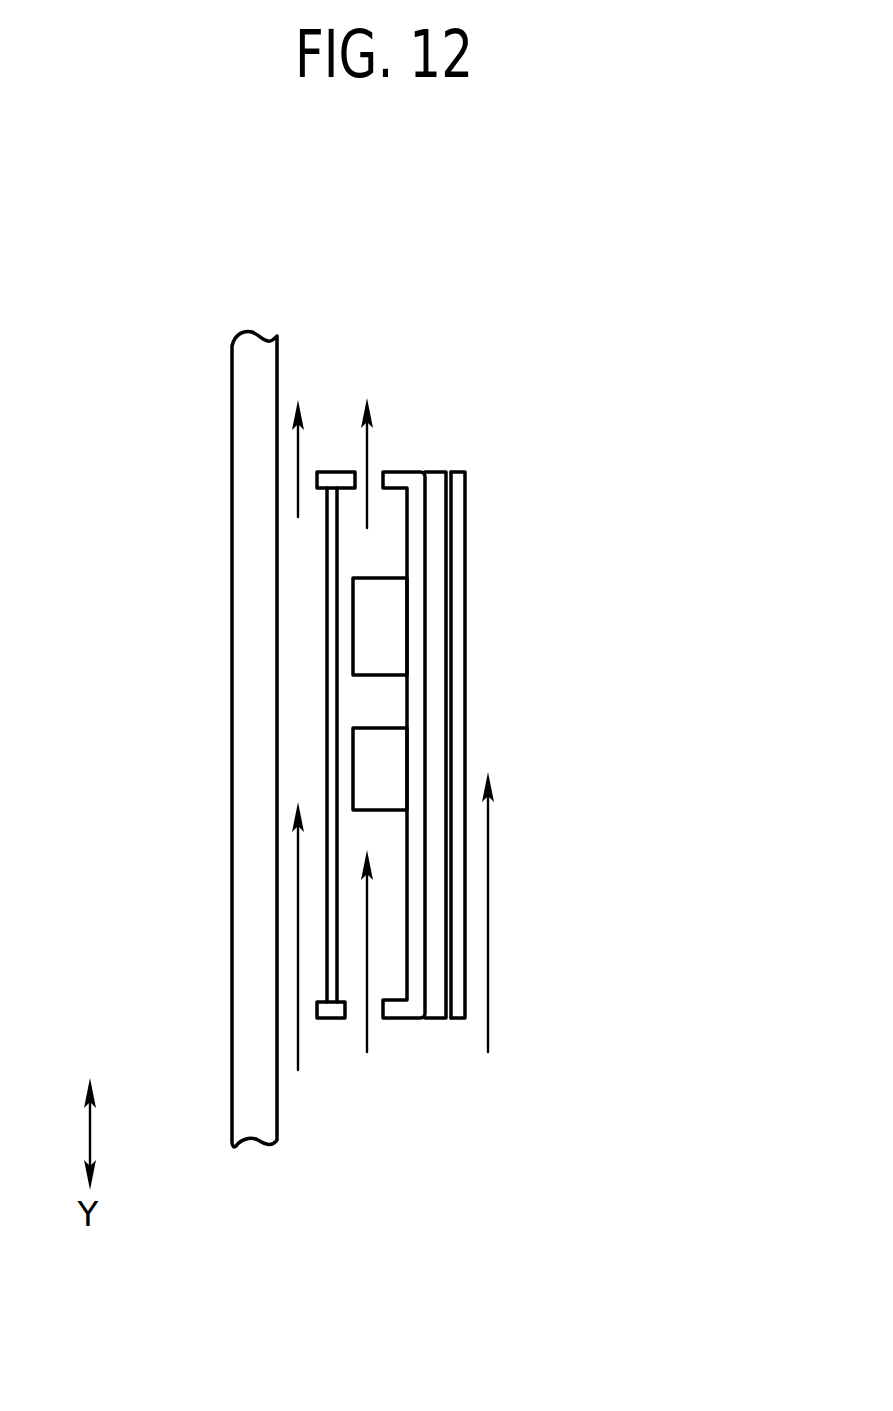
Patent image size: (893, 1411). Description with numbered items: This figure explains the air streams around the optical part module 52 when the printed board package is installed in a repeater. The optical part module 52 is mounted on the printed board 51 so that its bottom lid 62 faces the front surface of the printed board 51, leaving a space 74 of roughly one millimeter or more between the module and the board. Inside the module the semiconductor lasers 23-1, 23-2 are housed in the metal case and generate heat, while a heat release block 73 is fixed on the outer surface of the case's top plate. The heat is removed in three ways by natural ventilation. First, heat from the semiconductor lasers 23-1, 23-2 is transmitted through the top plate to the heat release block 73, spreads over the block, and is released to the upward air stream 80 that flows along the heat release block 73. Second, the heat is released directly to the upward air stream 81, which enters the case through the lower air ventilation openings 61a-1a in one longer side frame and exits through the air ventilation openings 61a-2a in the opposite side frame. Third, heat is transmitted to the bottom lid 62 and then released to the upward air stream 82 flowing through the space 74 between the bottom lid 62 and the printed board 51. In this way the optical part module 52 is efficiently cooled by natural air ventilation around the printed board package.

The printed board 51 is at (222, 495).
The optical part module 52 is at (482, 665).
The bottom lid 62 is at (330, 625).
The heat release block 73 is at (457, 612).
The space 74 is at (297, 705).
The semiconductor laser 23-1 is at (377, 590).
The semiconductor laser 23-2 is at (383, 772).
The upward air stream 80 is at (490, 945).
The upward air stream 81 is at (362, 1042).
The upward air stream 82 is at (298, 896).
The air ventilation openings 61a-1a is at (353, 1010).
The air ventilation openings 61a-2a is at (373, 478).